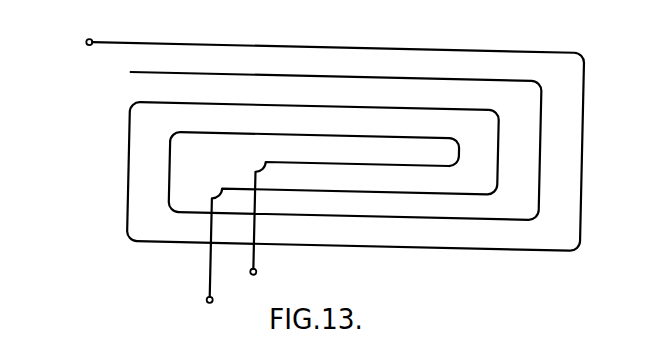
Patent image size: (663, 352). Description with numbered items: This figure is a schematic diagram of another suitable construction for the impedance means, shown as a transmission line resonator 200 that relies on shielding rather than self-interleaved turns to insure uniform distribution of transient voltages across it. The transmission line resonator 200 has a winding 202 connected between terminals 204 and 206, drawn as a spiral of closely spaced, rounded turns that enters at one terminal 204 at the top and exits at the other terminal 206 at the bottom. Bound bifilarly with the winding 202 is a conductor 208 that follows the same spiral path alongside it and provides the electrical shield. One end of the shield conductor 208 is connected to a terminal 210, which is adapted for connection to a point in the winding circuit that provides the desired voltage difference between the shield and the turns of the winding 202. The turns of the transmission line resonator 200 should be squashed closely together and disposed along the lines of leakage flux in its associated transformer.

The transmission line resonator 200 is at (332, 162).
The winding 202 is at (356, 48).
The terminal 204 is at (87, 41).
The terminal 206 is at (208, 300).
The shield conductor 208 is at (356, 77).
The terminal 210 is at (257, 275).